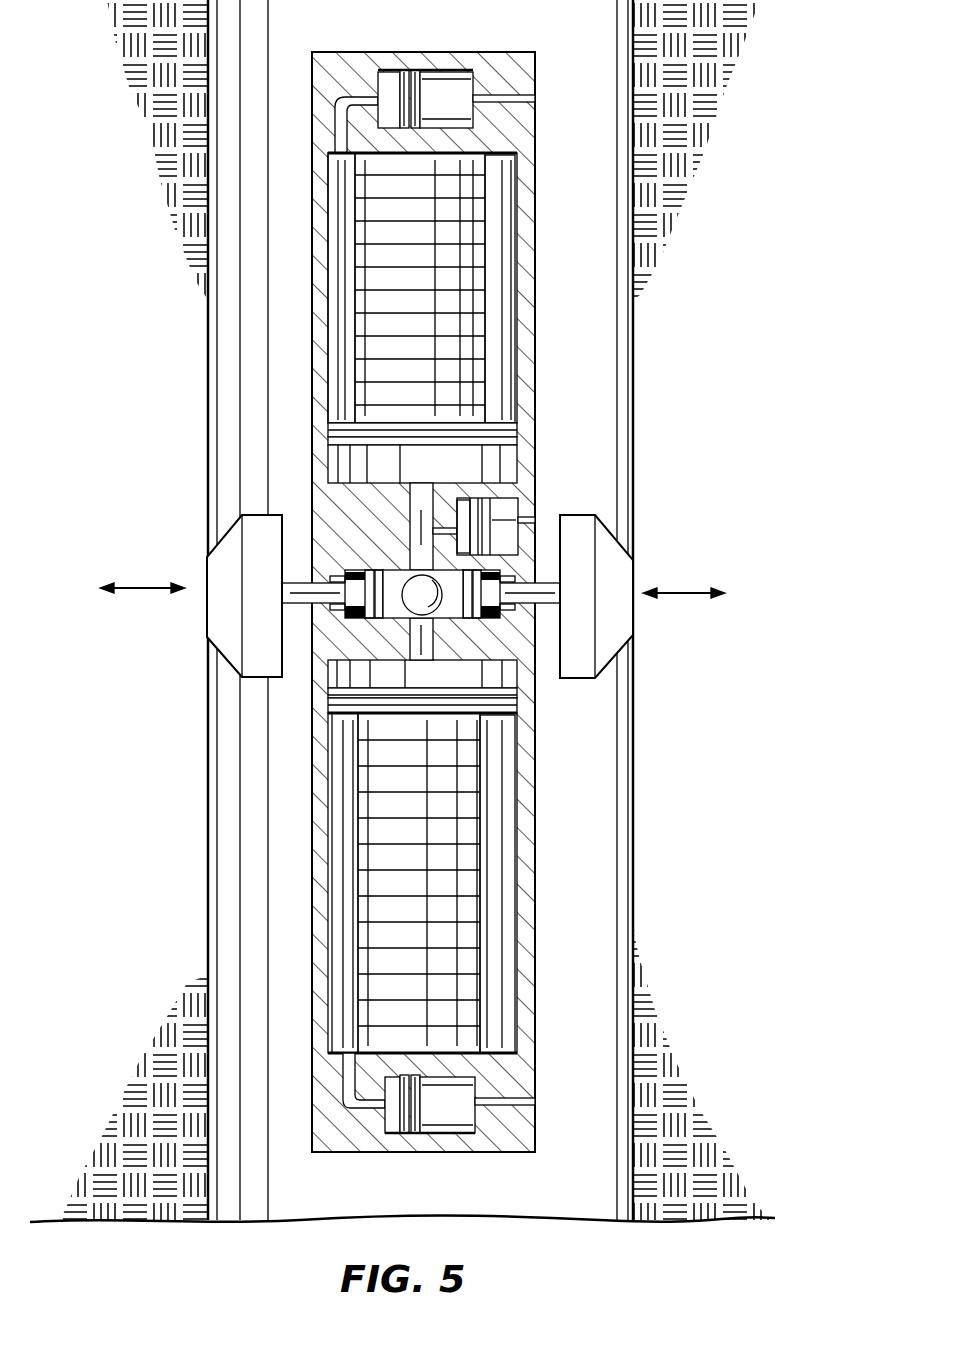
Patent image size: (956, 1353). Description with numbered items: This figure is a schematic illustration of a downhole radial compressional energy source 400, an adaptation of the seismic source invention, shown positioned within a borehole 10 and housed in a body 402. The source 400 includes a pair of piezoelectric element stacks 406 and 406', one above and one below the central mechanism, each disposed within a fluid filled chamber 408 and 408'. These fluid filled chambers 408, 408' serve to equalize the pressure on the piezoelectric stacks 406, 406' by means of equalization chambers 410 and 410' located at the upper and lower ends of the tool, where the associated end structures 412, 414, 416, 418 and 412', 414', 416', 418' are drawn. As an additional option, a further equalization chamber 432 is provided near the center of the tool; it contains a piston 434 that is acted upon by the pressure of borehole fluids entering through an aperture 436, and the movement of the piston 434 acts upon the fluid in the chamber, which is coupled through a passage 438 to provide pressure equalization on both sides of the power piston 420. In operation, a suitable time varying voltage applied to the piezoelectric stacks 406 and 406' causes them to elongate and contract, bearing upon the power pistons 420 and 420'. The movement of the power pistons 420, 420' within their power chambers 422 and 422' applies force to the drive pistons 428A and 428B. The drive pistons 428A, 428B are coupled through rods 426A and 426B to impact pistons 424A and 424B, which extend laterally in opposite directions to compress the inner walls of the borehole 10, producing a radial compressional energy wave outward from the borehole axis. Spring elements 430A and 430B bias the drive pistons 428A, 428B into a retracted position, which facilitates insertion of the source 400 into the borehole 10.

The borehole 10 is at (637, 292).
The radial compressional energy source 400 is at (570, 340).
The housing 402 is at (527, 140).
The piezoelectric element stack 406 is at (464, 288).
The fluid filled chamber 408 is at (480, 288).
The equalization chamber 410 is at (457, 69).
The housing wall 412 is at (301, 64).
The conduit 414 is at (360, 82).
The contact rings 416 is at (426, 69).
The electrical lead 418 is at (537, 77).
The power piston 420 is at (468, 418).
The power chamber 422 is at (467, 449).
The impact piston 424A is at (230, 562).
The impact piston 424B is at (618, 572).
The rod 426A is at (345, 605).
The rod 426B is at (562, 578).
The drive piston 428A is at (365, 615).
The drive piston 428B is at (535, 640).
The spring element 430A is at (350, 580).
The spring element 430B is at (545, 620).
The equalization chamber 432 is at (440, 520).
The piston 434 is at (490, 535).
The aperture 436 is at (543, 580).
The passage 438 is at (437, 490).
The power chamber 422' is at (522, 712).
The power piston 420' is at (470, 729).
The piezoelectric element stack 406' is at (467, 883).
The fluid filled chamber 408' is at (480, 883).
The equalization chamber 410' is at (473, 1137).
The lower housing wall 412' is at (305, 1150).
The lower conduit 414' is at (366, 1128).
The lower contact rings 416' is at (431, 1139).
The lower electrical lead 418' is at (541, 1080).